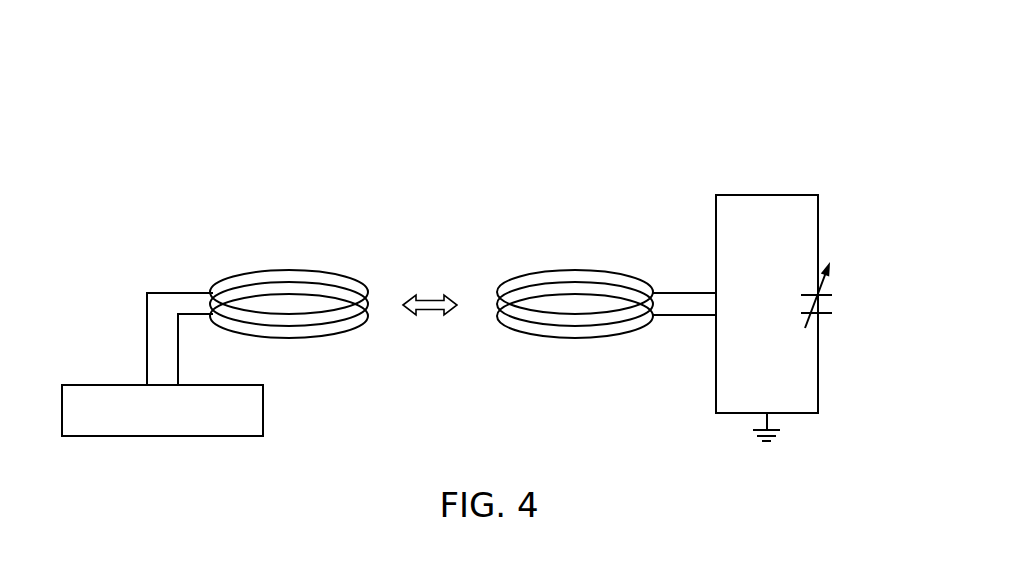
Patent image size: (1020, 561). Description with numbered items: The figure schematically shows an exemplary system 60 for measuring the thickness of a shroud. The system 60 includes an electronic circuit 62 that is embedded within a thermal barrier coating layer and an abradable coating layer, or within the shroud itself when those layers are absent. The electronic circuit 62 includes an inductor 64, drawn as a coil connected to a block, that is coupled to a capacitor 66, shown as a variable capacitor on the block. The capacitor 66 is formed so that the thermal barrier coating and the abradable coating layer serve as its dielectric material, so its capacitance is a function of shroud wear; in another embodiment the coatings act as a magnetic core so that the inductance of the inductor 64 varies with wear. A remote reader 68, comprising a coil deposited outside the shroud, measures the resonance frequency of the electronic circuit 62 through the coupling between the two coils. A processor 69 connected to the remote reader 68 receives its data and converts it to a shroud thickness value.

The system 60 is at (808, 81).
The electronic circuit 62 is at (768, 195).
The inductor 64 is at (572, 269).
The capacitor 66 is at (825, 315).
The remote reader 68 is at (298, 269).
The processor 69 is at (128, 385).